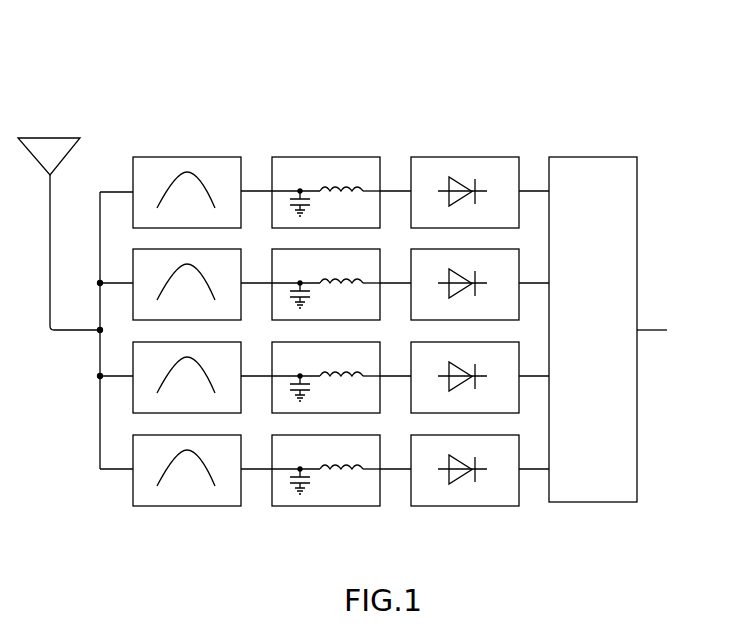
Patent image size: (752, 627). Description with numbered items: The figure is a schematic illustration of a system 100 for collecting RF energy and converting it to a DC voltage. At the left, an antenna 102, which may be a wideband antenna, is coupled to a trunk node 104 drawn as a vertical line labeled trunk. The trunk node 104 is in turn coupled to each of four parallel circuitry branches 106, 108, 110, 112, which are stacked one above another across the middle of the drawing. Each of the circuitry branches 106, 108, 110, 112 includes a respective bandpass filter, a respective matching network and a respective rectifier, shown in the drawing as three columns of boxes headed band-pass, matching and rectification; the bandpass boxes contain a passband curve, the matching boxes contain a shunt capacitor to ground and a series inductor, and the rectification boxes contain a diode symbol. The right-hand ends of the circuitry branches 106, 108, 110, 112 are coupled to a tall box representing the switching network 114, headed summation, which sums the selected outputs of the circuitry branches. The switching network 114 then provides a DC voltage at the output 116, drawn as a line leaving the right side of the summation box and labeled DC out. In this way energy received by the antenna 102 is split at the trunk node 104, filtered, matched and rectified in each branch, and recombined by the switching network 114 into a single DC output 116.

The system 100 is at (657, 92).
The antenna 102 is at (60, 138).
The trunk node 104 is at (100, 332).
The circuitry branch 106 is at (130, 175).
The circuitry branch 108 is at (131, 262).
The circuitry branch 110 is at (131, 354).
The circuitry branch 112 is at (124, 488).
The switching network 114 is at (593, 329).
The output 116 is at (684, 306).